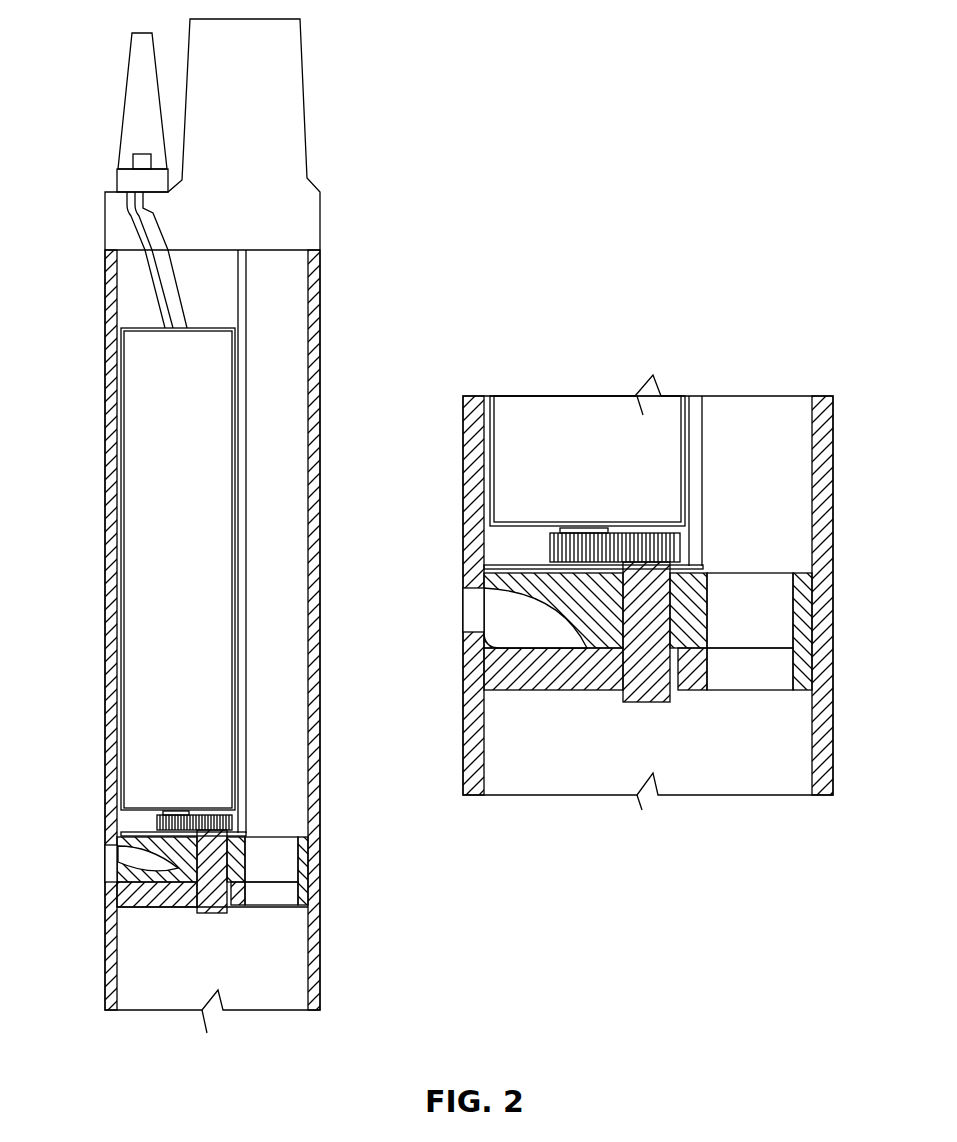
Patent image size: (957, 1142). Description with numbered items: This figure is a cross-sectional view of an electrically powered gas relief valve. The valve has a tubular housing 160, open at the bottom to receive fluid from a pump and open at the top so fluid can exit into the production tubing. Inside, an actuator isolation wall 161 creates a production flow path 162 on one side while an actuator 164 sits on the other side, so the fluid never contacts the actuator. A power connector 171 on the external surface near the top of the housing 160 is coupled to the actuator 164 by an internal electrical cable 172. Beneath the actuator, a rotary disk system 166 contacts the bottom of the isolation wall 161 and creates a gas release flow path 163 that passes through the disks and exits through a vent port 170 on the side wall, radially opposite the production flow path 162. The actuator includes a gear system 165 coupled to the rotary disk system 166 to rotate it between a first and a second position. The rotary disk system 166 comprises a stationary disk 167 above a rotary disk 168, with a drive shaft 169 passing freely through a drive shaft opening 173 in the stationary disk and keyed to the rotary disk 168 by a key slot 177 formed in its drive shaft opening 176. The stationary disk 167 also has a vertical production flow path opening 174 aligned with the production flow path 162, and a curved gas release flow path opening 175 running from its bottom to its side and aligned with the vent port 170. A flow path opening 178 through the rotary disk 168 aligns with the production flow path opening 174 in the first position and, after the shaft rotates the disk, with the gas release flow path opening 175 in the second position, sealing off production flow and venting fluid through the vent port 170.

The housing 160 is at (322, 292).
The actuator isolation wall 161 is at (247, 610).
The production flow path 162 is at (287, 403).
The gas release flow path 163 is at (113, 892).
The actuator 164 is at (142, 478).
The gear system 165 is at (178, 815).
The rotary disk system 166 is at (237, 915).
The stationary disk 167 is at (178, 868).
The rotary disk 168 is at (158, 907).
The drive shaft 169 is at (212, 848).
The vent port 170 is at (148, 870).
The power connector 171 is at (122, 113).
The internal electrical cable 172 is at (130, 217).
The drive shaft opening 173 is at (668, 581).
The production flow path opening 174 is at (780, 600).
The gas release flow path opening 175 is at (503, 604).
The drive shaft opening 176 is at (635, 677).
The key slot 177 is at (682, 677).
The flow path opening 178 is at (773, 677).